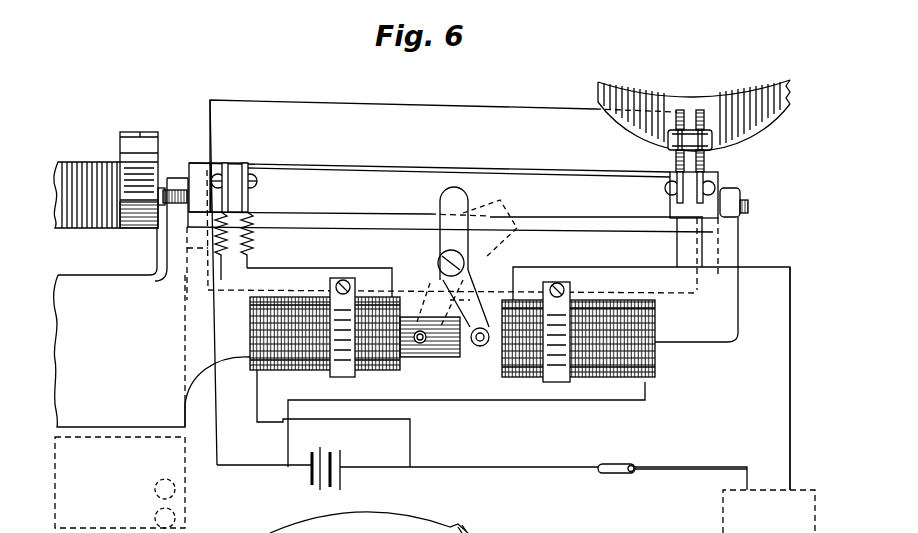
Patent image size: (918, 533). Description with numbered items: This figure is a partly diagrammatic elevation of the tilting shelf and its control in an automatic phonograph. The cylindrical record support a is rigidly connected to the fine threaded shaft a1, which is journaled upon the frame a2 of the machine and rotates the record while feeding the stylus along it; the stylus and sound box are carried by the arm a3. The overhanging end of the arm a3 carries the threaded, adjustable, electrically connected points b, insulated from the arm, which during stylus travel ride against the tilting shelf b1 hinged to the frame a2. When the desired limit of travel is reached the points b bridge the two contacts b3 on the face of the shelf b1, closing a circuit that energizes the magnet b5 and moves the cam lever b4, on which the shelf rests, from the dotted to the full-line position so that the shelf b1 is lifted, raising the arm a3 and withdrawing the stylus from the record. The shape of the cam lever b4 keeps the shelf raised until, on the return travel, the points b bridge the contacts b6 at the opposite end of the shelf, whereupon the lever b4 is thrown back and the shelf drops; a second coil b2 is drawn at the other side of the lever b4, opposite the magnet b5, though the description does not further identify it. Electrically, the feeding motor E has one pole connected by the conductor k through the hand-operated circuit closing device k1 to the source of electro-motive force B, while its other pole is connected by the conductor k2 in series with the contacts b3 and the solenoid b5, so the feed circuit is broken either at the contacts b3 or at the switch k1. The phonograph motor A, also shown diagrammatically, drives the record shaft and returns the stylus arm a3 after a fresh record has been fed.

The record support a is at (422, 108).
The threaded shaft a1 is at (84, 162).
The frame a2 is at (131, 302).
The arm a3 is at (694, 104).
The contact points b is at (699, 112).
The tilting shelf b1 is at (450, 197).
The electromagnet coil b2 is at (270, 373).
The contacts b3 is at (736, 172).
The cam lever b4 is at (470, 248).
The magnet b5 is at (635, 372).
The contacts b6 is at (242, 163).
The electric motor A is at (120, 482).
The source of electro-motive force B is at (342, 452).
The feeding motor E is at (769, 511).
The conductor k is at (683, 467).
The circuit closing device k1 is at (611, 464).
The conductor k2 is at (788, 363).